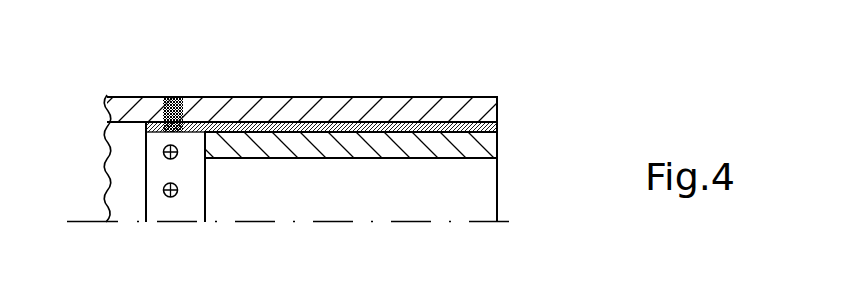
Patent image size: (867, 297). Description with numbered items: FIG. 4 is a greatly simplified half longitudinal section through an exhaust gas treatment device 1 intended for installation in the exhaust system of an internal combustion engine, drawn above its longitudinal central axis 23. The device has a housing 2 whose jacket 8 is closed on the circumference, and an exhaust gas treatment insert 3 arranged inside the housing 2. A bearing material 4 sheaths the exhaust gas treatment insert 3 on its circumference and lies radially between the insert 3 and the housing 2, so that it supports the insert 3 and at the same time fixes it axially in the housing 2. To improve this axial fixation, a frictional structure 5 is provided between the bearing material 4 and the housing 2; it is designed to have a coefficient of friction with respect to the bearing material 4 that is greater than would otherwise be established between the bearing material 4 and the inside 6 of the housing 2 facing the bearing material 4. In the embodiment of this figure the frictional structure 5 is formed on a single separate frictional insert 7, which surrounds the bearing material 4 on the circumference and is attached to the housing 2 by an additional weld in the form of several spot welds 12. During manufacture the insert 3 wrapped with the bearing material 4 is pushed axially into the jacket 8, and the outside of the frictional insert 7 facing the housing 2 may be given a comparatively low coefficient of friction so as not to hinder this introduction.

The exhaust gas treatment device 1 is at (549, 126).
The housing 2 is at (462, 88).
The exhaust gas treatment insert 3 is at (338, 202).
The bearing material 4 is at (410, 150).
The frictional structure 5 is at (314, 123).
The inside 6 is at (107, 142).
The frictional insert 7 is at (394, 112).
The jacket 8 is at (260, 100).
The spot welds 12 is at (163, 107).
The longitudinal central axis 23 is at (90, 223).